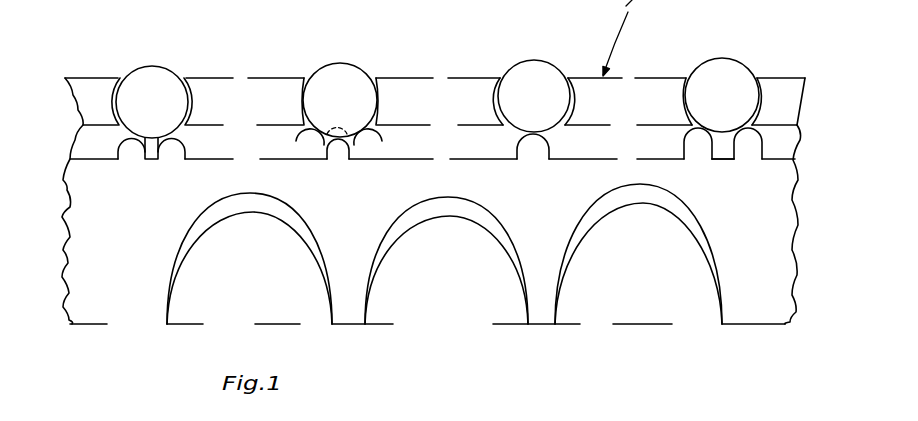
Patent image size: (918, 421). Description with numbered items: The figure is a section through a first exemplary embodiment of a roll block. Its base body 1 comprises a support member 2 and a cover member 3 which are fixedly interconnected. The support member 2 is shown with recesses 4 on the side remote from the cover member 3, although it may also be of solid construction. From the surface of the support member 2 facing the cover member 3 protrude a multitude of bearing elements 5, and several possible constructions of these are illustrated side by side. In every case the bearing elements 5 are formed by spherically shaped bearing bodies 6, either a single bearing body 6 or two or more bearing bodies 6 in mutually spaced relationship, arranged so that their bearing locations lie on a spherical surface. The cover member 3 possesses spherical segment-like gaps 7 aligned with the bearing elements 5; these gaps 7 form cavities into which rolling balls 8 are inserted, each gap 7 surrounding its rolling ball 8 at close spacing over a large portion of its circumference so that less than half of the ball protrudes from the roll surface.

The base body 1 is at (795, 63).
The support member 2 is at (795, 238).
The cover member 3 is at (790, 142).
The recesses 4 is at (444, 254).
The bearing elements 5 is at (152, 173).
The bearing bodies 6 is at (125, 146).
The spherical segment-like gaps 7 is at (190, 97).
The rolling balls 8 is at (139, 85).